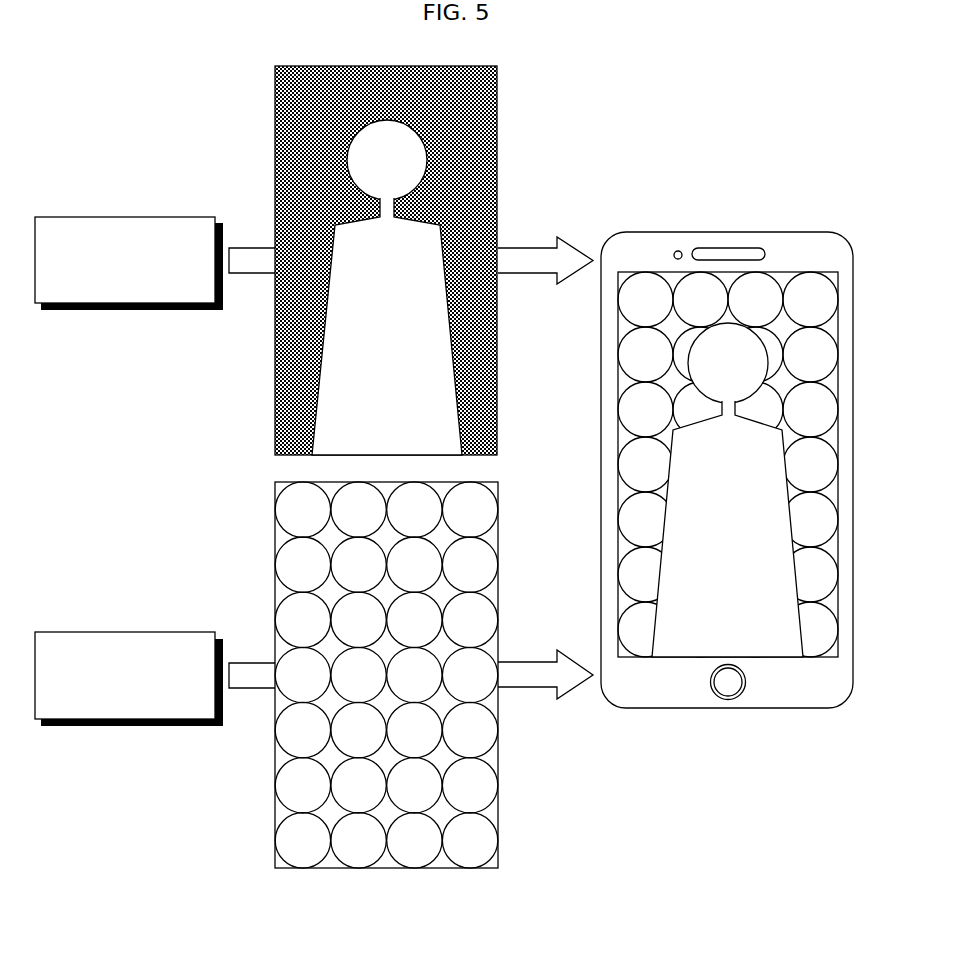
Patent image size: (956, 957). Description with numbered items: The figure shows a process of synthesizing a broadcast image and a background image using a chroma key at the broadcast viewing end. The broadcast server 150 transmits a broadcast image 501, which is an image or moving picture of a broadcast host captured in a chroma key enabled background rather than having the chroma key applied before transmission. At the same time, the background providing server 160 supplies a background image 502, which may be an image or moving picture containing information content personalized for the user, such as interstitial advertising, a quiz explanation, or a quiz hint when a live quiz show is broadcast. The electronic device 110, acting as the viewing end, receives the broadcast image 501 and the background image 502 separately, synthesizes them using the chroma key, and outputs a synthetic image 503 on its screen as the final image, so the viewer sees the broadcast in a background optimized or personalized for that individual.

The broadcast server 150 is at (140, 217).
The background providing server 160 is at (140, 632).
The broadcast image 501 is at (275, 370).
The background image 502 is at (275, 782).
The electronic device 110 is at (756, 470).
The synthetic image 503 is at (838, 462).